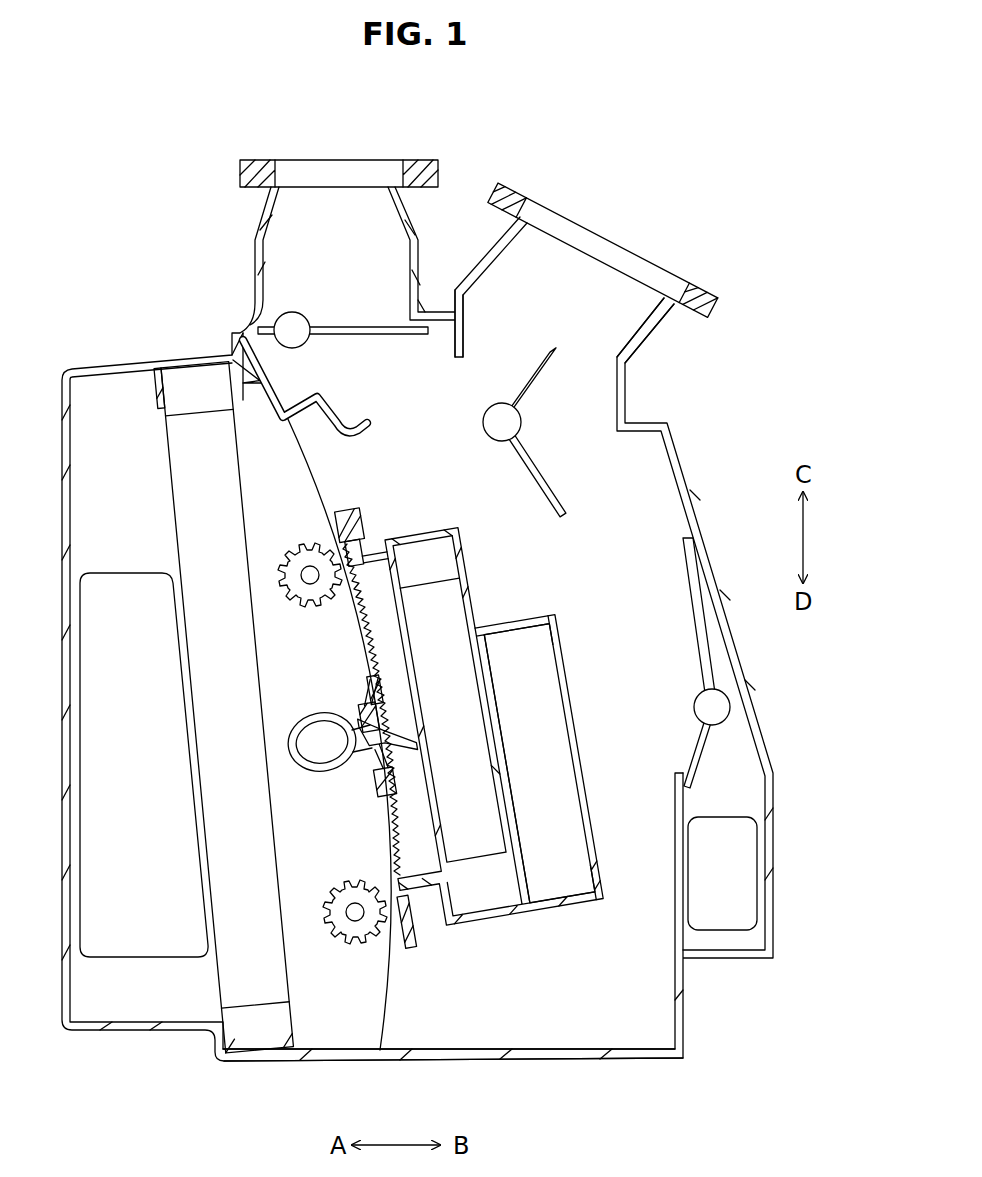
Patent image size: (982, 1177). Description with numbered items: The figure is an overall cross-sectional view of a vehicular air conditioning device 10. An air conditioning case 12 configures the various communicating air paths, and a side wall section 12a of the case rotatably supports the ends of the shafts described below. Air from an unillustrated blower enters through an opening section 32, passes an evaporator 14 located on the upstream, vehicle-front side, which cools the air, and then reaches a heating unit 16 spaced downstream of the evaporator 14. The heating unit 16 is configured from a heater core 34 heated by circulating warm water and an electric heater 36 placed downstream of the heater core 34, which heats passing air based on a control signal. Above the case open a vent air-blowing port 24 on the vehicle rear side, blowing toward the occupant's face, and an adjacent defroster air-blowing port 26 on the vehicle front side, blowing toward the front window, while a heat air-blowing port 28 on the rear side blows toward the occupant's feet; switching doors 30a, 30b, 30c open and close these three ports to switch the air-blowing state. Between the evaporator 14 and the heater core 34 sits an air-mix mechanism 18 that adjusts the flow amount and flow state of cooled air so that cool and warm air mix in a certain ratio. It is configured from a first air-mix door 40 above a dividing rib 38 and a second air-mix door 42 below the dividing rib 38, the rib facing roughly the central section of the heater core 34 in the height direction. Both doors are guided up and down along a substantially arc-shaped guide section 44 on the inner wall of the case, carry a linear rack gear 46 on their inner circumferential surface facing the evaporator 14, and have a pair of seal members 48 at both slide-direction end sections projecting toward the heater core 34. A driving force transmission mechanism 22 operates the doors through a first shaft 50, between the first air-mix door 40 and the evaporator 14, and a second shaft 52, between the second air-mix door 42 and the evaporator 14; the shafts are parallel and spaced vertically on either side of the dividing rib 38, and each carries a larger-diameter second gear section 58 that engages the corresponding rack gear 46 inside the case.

The vehicular air conditioning device 10 is at (533, 101).
The air conditioning case 12 is at (688, 432).
The side wall section 12a is at (574, 1032).
The evaporator 14 is at (200, 472).
The heating unit 16 is at (472, 723).
The air-mix mechanism 18 is at (342, 783).
The driving force transmission mechanism 22 is at (346, 952).
The vent air-blowing port 24 is at (578, 228).
The defroster air-blowing port 26 is at (312, 158).
The heat air-blowing port 28 is at (729, 918).
The switching door 30a is at (530, 380).
The switching door 30b is at (360, 324).
The switching door 30c is at (686, 573).
The opening section 32 is at (143, 928).
The heater core 34 is at (372, 617).
The electric heater 36 is at (550, 727).
The dividing rib 38 is at (400, 738).
The first air-mix door 40 is at (435, 698).
The second air-mix door 42 is at (390, 823).
The guide section 44 is at (320, 466).
The rack gear 46 is at (345, 624).
The seal member 48 is at (378, 500).
The first shaft 50 is at (297, 534).
The second shaft 52 is at (322, 910).
The second gear section 58 is at (300, 576).